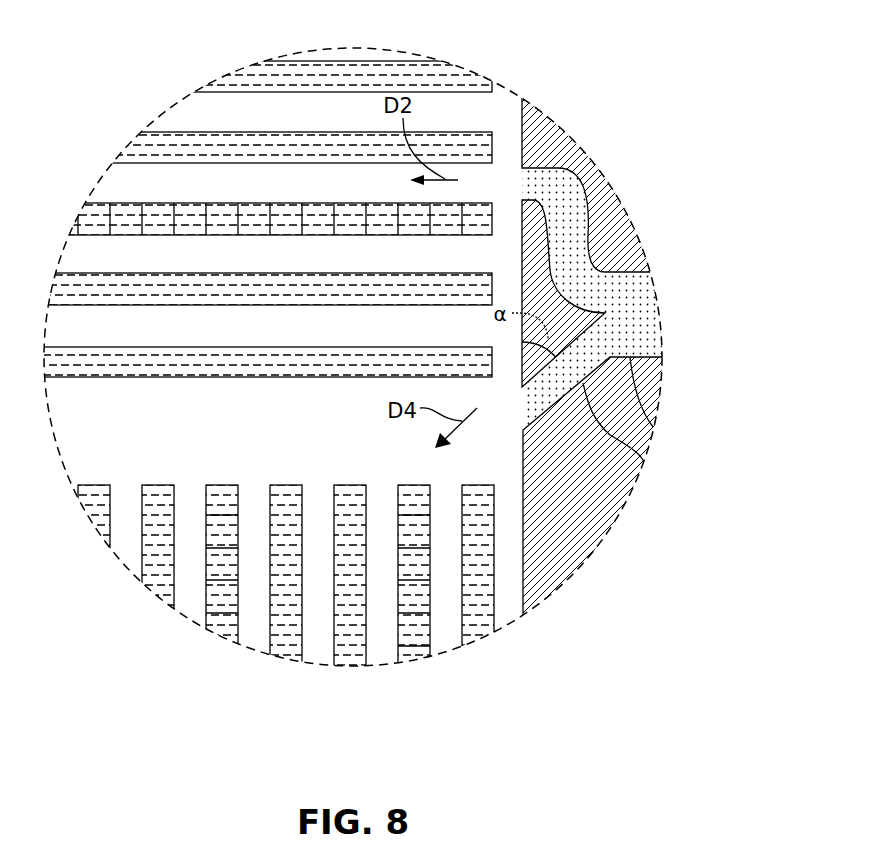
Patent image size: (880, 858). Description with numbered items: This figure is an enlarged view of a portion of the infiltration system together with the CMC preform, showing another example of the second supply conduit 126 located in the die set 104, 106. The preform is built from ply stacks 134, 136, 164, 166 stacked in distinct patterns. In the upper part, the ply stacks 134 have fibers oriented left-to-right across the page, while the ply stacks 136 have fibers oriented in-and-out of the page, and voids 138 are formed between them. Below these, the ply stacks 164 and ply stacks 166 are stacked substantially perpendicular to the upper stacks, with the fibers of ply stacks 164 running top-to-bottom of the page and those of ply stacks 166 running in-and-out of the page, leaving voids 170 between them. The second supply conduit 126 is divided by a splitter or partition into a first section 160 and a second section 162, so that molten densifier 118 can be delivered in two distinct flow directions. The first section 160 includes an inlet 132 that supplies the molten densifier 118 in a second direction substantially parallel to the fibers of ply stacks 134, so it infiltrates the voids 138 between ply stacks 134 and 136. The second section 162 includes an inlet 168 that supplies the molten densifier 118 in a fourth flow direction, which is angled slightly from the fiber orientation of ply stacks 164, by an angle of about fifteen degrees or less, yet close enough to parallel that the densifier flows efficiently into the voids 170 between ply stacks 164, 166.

The die set 104 is at (620, 380).
The second layer 106 is at (607, 186).
The molten densifier 118 is at (658, 320).
The second supply conduit 126 is at (653, 427).
The inlet 132 is at (510, 184).
The ply stacks 134 is at (167, 132).
The ply stacks 136 is at (100, 203).
The voids 138 is at (265, 254).
The first section 160 is at (560, 168).
The second section 162 is at (647, 470).
The ply stacks 164 is at (286, 585).
The ply stacks 166 is at (318, 585).
The inlet 168 is at (508, 411).
The voids 170 is at (286, 553).